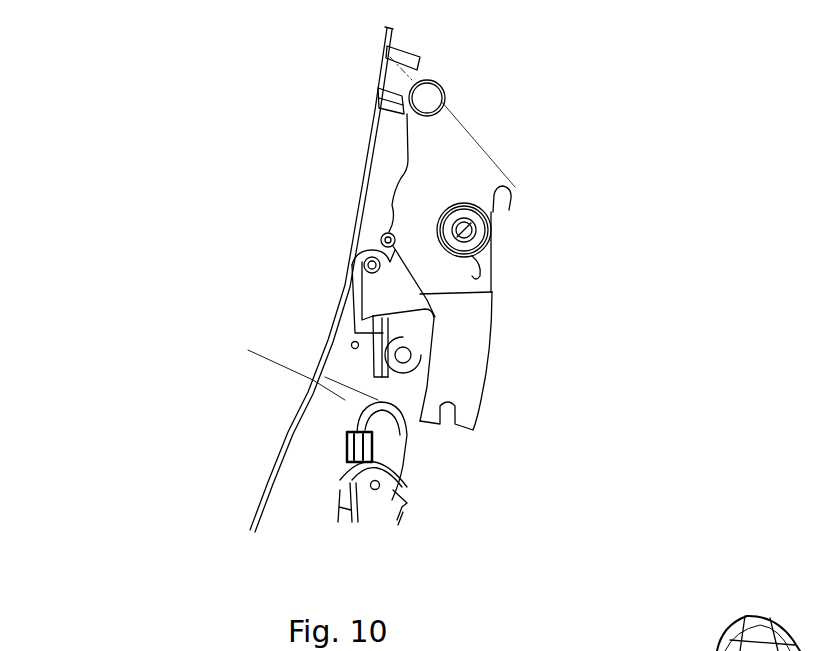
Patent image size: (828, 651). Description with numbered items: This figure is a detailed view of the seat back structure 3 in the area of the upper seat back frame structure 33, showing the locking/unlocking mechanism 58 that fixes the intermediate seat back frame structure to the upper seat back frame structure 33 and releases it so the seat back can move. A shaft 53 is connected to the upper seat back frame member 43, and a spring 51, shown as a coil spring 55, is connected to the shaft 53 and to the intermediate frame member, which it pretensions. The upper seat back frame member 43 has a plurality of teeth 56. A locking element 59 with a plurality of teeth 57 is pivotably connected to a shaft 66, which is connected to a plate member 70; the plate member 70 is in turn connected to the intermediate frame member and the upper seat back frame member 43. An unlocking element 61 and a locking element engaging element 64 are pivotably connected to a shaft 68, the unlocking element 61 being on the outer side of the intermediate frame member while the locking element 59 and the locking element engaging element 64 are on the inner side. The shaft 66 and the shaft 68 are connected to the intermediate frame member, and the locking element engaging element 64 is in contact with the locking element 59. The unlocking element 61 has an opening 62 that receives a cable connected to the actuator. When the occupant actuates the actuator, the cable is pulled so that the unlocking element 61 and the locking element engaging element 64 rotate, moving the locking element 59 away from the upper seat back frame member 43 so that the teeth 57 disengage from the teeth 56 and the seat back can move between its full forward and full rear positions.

The seat back structure 3 is at (478, 103).
The teeth 57 is at (386, 246).
The plate member 70 is at (360, 247).
The shaft 66 is at (364, 261).
The locking/unlocking mechanism 58 is at (345, 293).
The locking element 59 is at (373, 301).
The locking element engaging element 64 is at (386, 330).
The opening 62 is at (353, 348).
The shaft 68 is at (405, 357).
The teeth 56 is at (420, 294).
The upper seat back frame structure 33 is at (542, 228).
The upper seat back frame member 43 is at (472, 340).
The shaft 53 is at (486, 234).
The spring 51 is at (494, 254).
The coil spring 55 is at (490, 205).
The unlocking element 61 is at (390, 382).